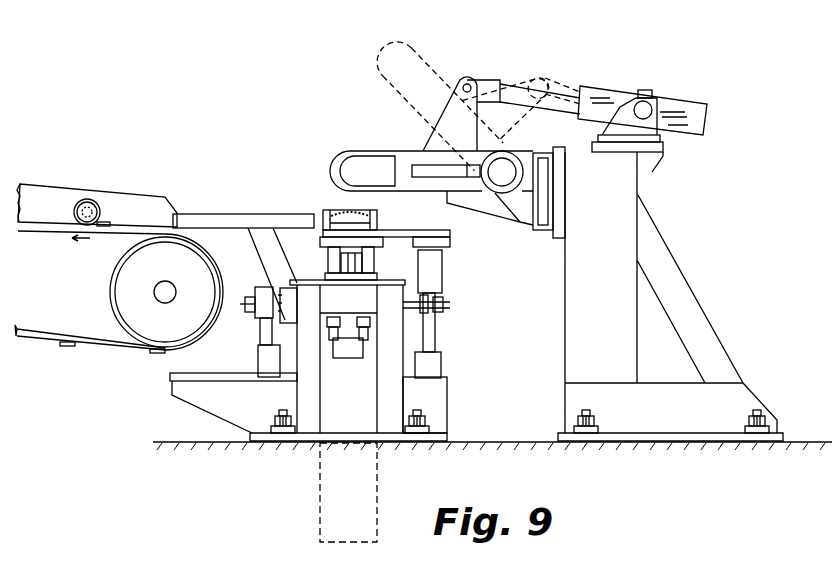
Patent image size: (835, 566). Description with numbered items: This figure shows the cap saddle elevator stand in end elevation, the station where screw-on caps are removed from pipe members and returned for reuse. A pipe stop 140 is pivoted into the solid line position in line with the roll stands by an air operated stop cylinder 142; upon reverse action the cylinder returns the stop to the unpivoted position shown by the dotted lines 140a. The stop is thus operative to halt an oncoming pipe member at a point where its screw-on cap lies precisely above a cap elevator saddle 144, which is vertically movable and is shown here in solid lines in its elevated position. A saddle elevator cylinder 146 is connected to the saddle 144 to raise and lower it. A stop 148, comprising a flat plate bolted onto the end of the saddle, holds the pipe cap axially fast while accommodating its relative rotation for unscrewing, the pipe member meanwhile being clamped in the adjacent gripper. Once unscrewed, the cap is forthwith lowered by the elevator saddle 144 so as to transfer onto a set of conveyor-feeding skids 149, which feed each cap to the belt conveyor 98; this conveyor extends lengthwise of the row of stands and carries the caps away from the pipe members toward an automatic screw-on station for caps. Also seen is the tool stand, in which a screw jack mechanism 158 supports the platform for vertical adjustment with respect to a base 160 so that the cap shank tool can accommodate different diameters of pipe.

The belt conveyor 98 is at (62, 227).
The conveyor-feeding skids 149 is at (218, 214).
The pipe stop 140 is at (363, 151).
The unpivoted position of pipe stop 140a is at (430, 63).
The stop cylinder 142 is at (612, 87).
The stop 148 is at (355, 213).
The cap elevator saddle 144 is at (373, 230).
The saddle elevator cylinder 146 is at (347, 358).
The screw jack mechanism 158 is at (258, 362).
The base 160 is at (170, 375).